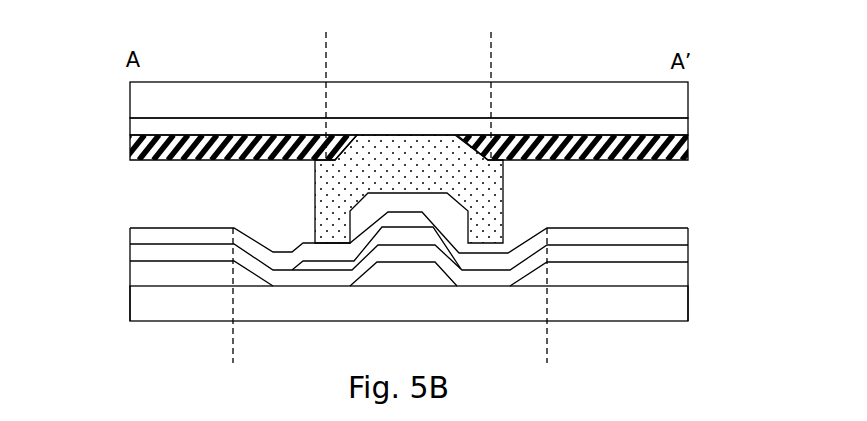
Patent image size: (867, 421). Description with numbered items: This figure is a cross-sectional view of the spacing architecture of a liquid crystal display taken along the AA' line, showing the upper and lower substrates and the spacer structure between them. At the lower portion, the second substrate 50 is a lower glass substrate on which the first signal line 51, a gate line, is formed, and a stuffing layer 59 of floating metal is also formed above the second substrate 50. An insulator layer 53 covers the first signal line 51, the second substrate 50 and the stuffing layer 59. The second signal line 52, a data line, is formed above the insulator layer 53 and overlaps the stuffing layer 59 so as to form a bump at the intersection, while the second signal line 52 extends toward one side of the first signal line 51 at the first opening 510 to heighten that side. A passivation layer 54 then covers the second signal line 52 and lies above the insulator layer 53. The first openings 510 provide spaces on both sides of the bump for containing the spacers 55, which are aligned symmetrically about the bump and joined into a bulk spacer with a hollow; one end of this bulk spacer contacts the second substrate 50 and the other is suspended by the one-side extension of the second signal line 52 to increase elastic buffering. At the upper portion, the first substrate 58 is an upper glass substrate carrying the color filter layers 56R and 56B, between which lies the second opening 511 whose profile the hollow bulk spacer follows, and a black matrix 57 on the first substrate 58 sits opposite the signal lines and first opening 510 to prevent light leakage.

The second substrate 50 is at (158, 303).
The first signal line 51 is at (147, 278).
The second signal line 52 is at (410, 236).
The insulator layer 53 is at (140, 253).
The passivation layer 54 is at (140, 237).
The spacer 55 is at (409, 189).
The color filter layer 56B is at (140, 153).
The color filter layer 56R is at (687, 153).
The black matrix 57 is at (140, 126).
The first substrate 58 is at (140, 100).
The stuffing layer 59 is at (405, 279).
The first opening 510 is at (545, 346).
The second opening 511 is at (328, 50).